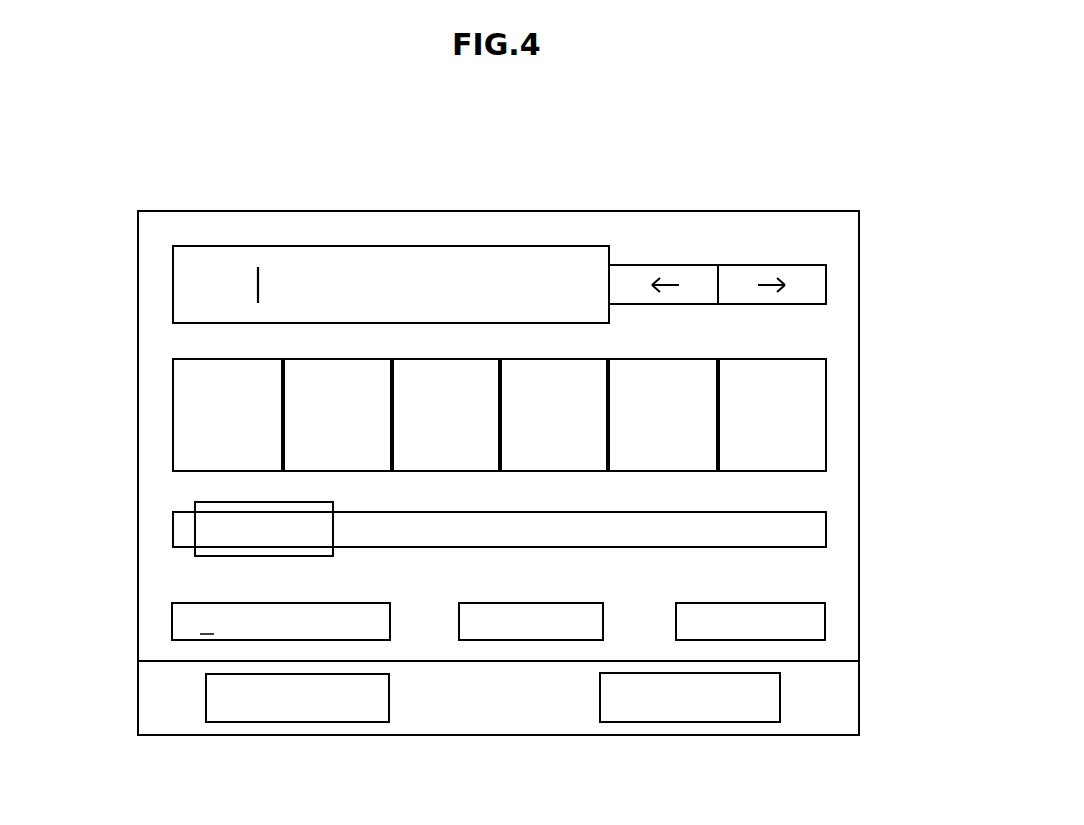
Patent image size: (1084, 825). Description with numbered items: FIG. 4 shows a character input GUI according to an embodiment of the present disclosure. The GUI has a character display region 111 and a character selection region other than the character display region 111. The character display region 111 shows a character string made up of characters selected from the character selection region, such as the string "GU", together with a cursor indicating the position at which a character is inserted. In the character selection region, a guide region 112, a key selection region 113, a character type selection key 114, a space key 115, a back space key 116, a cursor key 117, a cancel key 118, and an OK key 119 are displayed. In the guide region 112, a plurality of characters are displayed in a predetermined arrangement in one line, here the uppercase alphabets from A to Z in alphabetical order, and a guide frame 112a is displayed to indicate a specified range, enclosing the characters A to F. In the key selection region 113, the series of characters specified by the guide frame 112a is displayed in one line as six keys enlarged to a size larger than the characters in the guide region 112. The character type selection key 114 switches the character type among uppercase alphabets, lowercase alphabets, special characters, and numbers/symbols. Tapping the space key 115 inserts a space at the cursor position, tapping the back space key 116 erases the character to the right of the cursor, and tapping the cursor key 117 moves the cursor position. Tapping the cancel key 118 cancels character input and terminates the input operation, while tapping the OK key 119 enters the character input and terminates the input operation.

The character display region 111 is at (519, 247).
The cursor key 117 is at (688, 265).
The key selection region 113 is at (838, 359).
The guide region 112 is at (172, 530).
The guide frame 112a is at (196, 502).
The character type selection key 114 is at (172, 620).
The space key 115 is at (595, 603).
The back space key 116 is at (825, 619).
The cancel key 118 is at (318, 722).
The OK key 119 is at (716, 722).